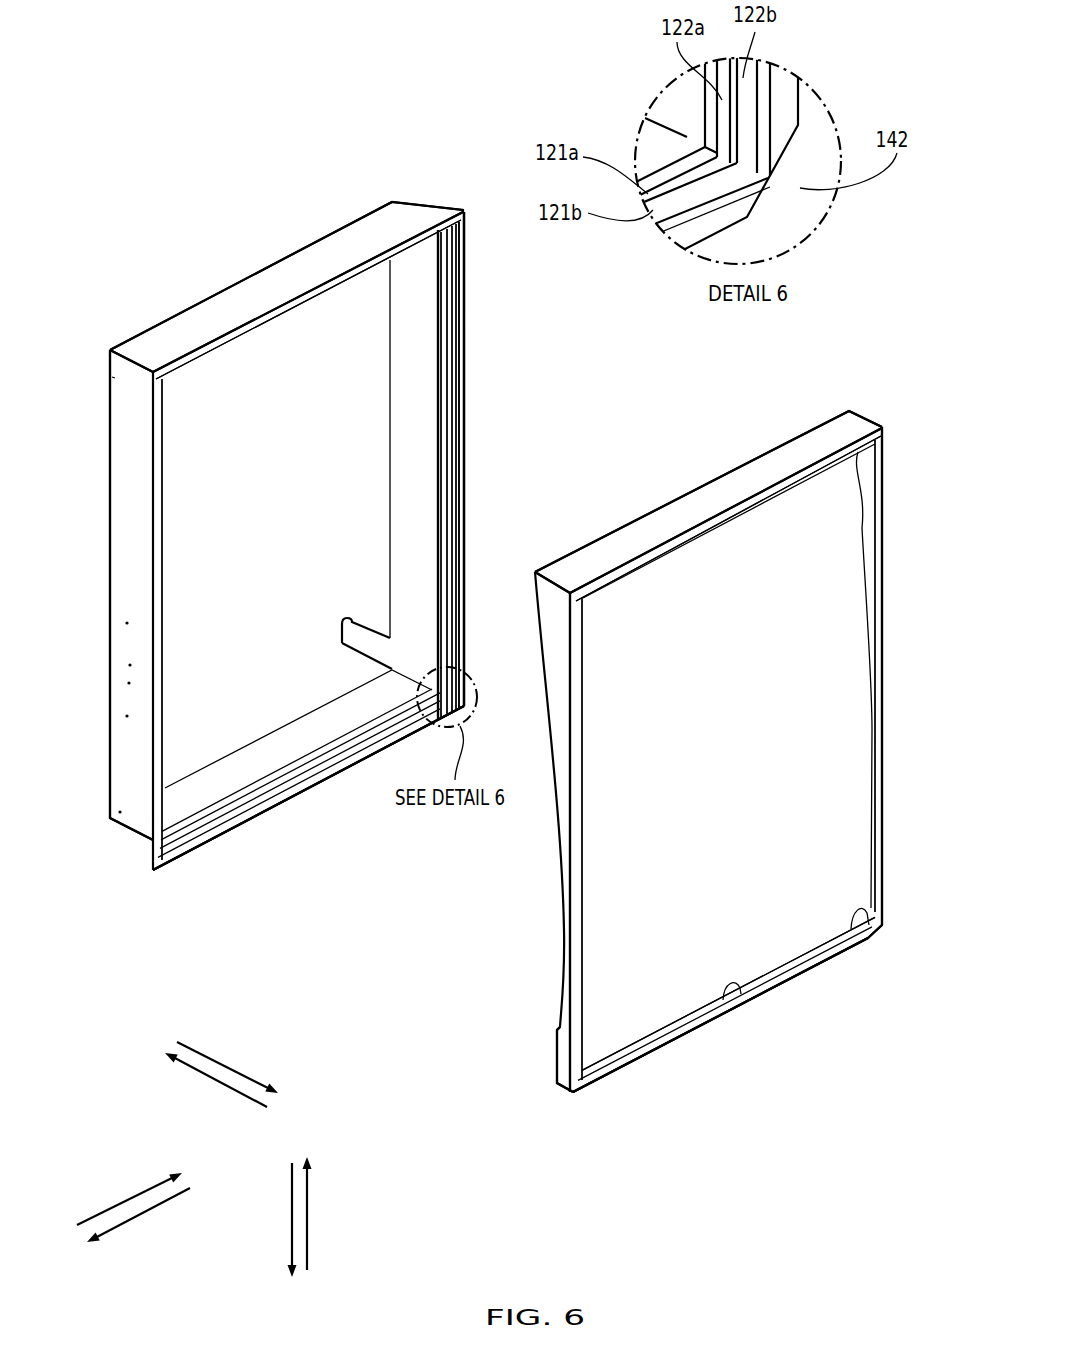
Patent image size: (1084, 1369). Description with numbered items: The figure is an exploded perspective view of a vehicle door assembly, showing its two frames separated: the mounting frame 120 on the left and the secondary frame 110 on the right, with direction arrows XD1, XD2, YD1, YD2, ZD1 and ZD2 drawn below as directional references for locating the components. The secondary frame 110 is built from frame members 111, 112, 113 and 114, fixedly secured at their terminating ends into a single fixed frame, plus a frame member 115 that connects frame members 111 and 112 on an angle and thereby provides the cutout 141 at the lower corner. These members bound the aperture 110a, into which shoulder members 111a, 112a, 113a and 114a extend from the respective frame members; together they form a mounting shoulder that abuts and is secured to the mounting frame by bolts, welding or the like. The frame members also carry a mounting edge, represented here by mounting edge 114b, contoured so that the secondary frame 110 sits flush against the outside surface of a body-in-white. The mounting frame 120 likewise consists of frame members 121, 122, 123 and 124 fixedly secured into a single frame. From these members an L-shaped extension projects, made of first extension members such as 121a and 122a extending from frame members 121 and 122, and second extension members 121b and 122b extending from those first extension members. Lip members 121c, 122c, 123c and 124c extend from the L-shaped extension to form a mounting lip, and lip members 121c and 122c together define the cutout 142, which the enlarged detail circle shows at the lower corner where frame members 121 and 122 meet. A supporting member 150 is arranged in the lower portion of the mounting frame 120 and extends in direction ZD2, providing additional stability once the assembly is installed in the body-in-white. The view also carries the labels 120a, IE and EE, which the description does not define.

The secondary frame 110 is at (848, 330).
The aperture 110a is at (784, 862).
The frame member 111 is at (740, 994).
The shoulder member 111a is at (670, 1035).
The frame member 112 is at (866, 485).
The shoulder member 112a is at (880, 717).
The frame member 113 is at (786, 460).
The shoulder member 113a is at (843, 445).
The frame member 114 is at (556, 843).
The shoulder member 114a is at (576, 920).
The mounting edge 114b is at (566, 1065).
The frame member 115 is at (856, 932).
The mounting frame 120 is at (399, 80).
The inner surface of second frame 120a is at (302, 675).
The frame member 121 is at (307, 742).
The first extension member 121a is at (648, 194).
The second extension member 121b is at (653, 210).
The lip member 121c is at (245, 818).
The frame member 122 is at (415, 415).
The first extension member 122a is at (722, 100).
The second extension member 122b is at (743, 78).
The lip member 122c is at (456, 338).
The frame member 123 is at (340, 242).
The lip member 123c is at (447, 214).
The frame member 124 is at (128, 378).
The lip member 124c is at (158, 442).
The cutout 141 is at (892, 926).
The cutout 142 is at (800, 188).
The supporting member 150 is at (360, 637).
The interior edge IE is at (196, 257).
The exterior edge EE is at (215, 878).
The direction XD1 is at (122, 1200).
The direction XD2 is at (148, 1212).
The direction YD1 is at (308, 1222).
The direction YD2 is at (291, 1203).
The direction ZD1 is at (227, 1068).
The direction ZD2 is at (207, 1079).